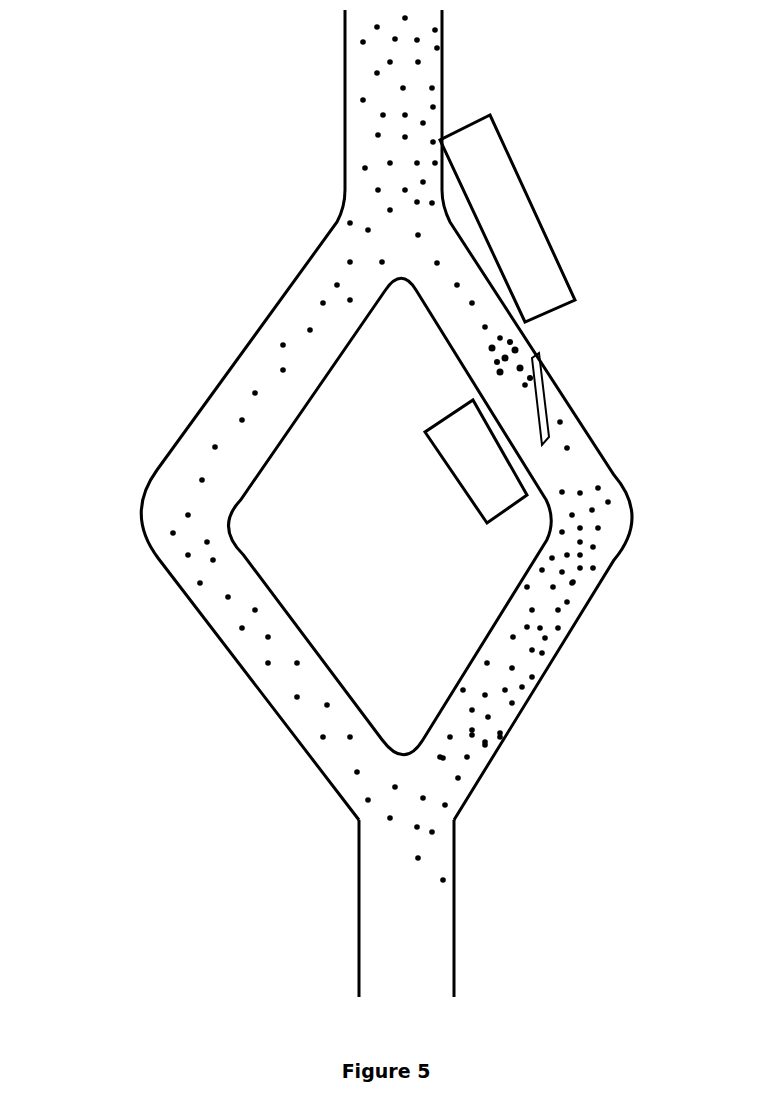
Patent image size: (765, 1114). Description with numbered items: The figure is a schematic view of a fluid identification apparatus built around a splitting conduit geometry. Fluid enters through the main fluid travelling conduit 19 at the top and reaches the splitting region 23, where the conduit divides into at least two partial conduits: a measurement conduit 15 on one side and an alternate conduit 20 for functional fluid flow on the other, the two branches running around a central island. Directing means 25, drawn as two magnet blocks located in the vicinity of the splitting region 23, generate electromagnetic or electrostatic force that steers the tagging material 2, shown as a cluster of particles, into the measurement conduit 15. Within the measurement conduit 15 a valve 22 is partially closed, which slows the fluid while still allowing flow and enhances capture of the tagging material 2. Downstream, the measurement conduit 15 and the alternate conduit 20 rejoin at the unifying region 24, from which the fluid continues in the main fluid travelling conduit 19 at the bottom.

The tagging material 2 is at (510, 360).
The measurement conduit 15 is at (580, 465).
The main fluid travelling conduit 19 is at (418, 72).
The alternate conduit 20 is at (183, 506).
The valve 22 is at (545, 396).
The splitting region 23 is at (397, 232).
The unifying region 24 is at (417, 792).
The directing means 25 is at (522, 228).